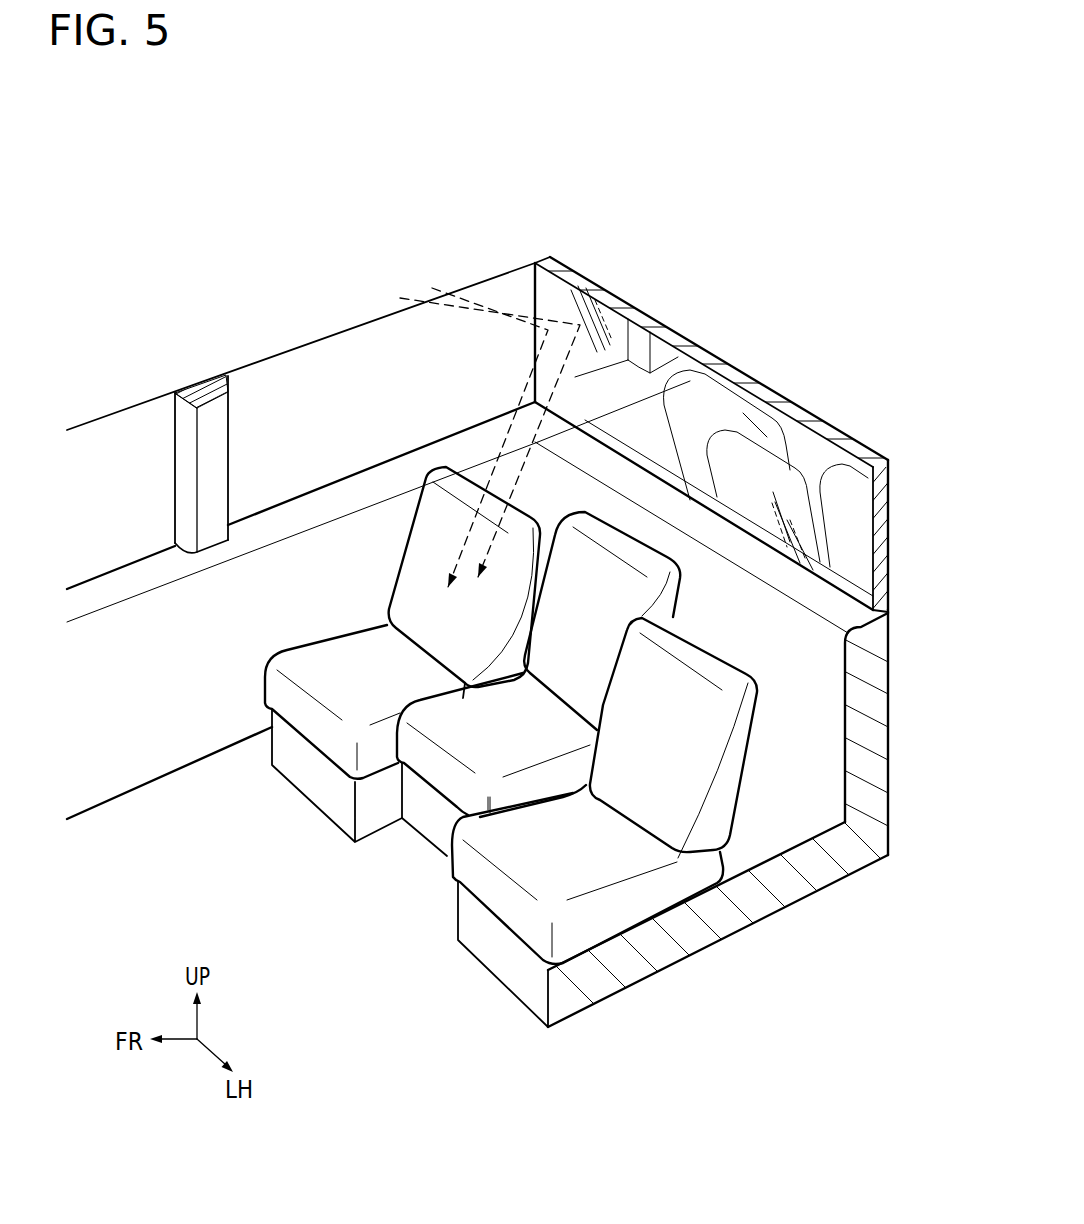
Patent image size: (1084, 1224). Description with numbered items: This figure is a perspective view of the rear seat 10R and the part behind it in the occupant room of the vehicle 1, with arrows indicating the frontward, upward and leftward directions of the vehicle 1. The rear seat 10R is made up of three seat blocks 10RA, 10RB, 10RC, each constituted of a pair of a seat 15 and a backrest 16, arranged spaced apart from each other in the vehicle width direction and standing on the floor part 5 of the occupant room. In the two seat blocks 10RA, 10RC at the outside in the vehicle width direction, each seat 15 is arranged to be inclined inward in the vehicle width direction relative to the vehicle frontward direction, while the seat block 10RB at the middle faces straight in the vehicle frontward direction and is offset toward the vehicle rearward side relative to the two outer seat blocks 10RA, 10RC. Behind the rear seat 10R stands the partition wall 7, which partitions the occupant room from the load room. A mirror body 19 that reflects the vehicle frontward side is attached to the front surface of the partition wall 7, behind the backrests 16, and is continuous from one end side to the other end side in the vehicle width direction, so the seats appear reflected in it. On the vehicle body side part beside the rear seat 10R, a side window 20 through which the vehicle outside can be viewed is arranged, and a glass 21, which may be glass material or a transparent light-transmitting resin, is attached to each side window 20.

The vehicle 1 is at (594, 220).
The floor part of the occupant room 5 is at (152, 822).
The partition wall 7 is at (816, 415).
The rear seat 10R is at (457, 452).
The seat block 10RA is at (530, 515).
The seat block 10RB is at (628, 596).
The seat block 10RC is at (714, 655).
The seat 15 is at (343, 693).
The backrest 16 is at (425, 555).
The mirror body 19 is at (740, 420).
The side window 20 is at (175, 438).
The glass 21 is at (97, 453).